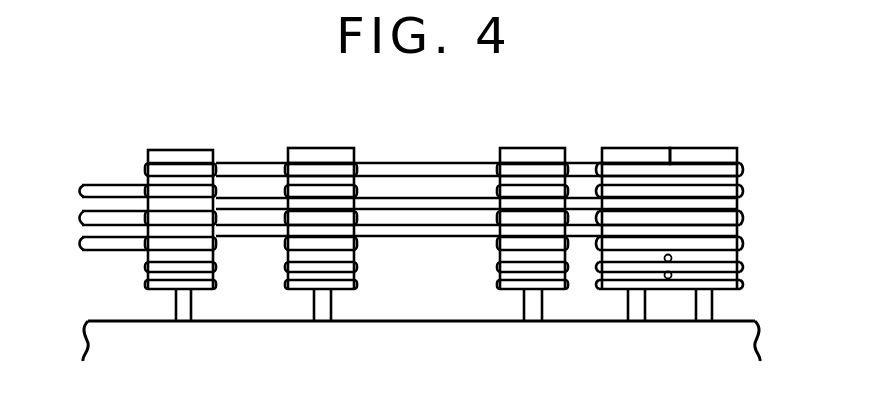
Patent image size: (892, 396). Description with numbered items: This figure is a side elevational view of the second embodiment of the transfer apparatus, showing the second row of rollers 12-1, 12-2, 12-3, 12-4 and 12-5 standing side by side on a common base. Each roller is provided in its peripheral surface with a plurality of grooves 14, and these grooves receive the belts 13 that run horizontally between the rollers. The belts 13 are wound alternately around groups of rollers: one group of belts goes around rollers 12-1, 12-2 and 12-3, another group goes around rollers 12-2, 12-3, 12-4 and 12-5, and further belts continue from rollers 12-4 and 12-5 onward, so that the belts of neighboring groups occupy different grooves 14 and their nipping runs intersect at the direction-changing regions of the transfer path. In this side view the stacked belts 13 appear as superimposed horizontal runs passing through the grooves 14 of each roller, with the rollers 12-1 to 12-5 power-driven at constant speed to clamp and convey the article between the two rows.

The roller 12-1 is at (175, 157).
The roller 12-2 is at (316, 157).
The roller 12-3 is at (531, 157).
The roller 12-4 is at (644, 157).
The roller 12-5 is at (710, 153).
The belts 13 is at (428, 163).
The grooves 14 is at (148, 275).